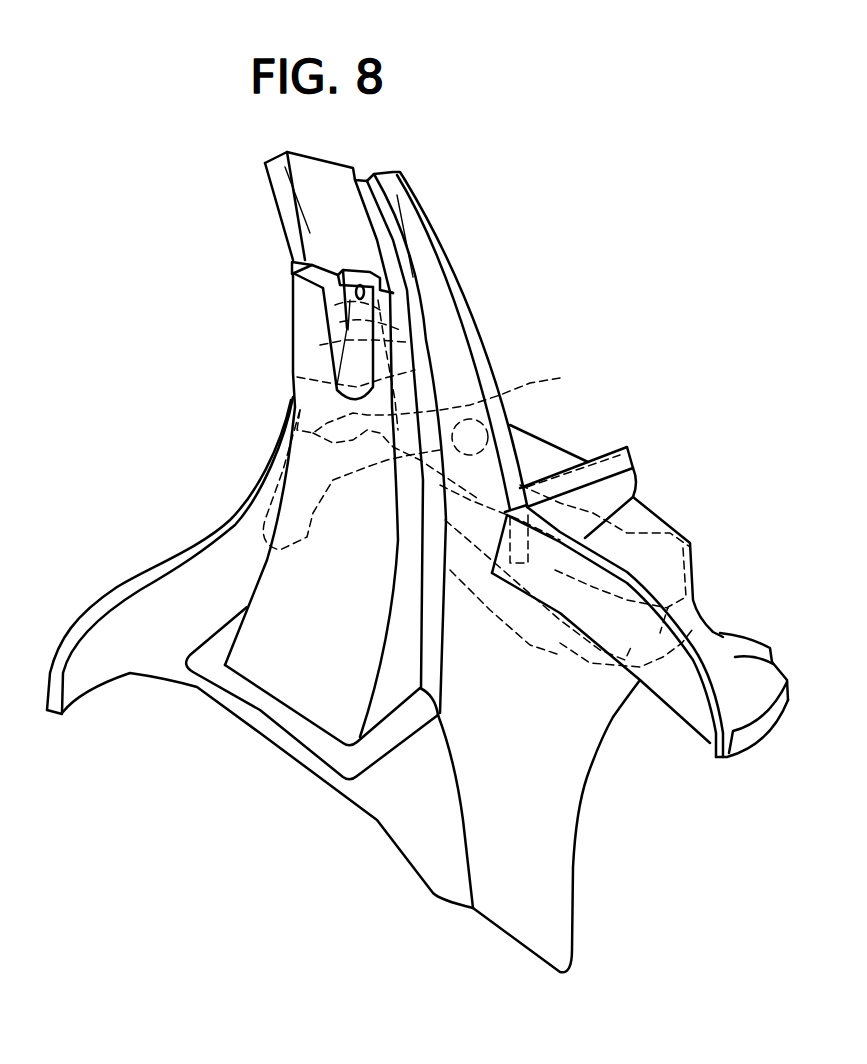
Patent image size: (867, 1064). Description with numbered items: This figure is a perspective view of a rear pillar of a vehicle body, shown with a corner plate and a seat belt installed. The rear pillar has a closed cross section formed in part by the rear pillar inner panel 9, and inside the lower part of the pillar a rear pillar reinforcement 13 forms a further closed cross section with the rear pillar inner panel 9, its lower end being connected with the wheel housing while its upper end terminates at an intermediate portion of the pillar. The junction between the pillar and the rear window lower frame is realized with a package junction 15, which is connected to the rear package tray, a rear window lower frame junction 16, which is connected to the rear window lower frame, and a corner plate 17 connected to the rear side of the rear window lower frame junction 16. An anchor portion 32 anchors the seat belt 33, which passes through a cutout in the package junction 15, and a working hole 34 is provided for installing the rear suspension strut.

The rear pillar inner panel 9 is at (373, 187).
The rear pillar reinforcement 13 is at (277, 682).
The package junction 15 is at (513, 425).
The rear window lower frame junction 16 is at (577, 453).
The corner plate 17 is at (713, 652).
The anchor portion 32 is at (325, 268).
The seat belt 33 is at (297, 377).
The working hole 34 is at (497, 393).